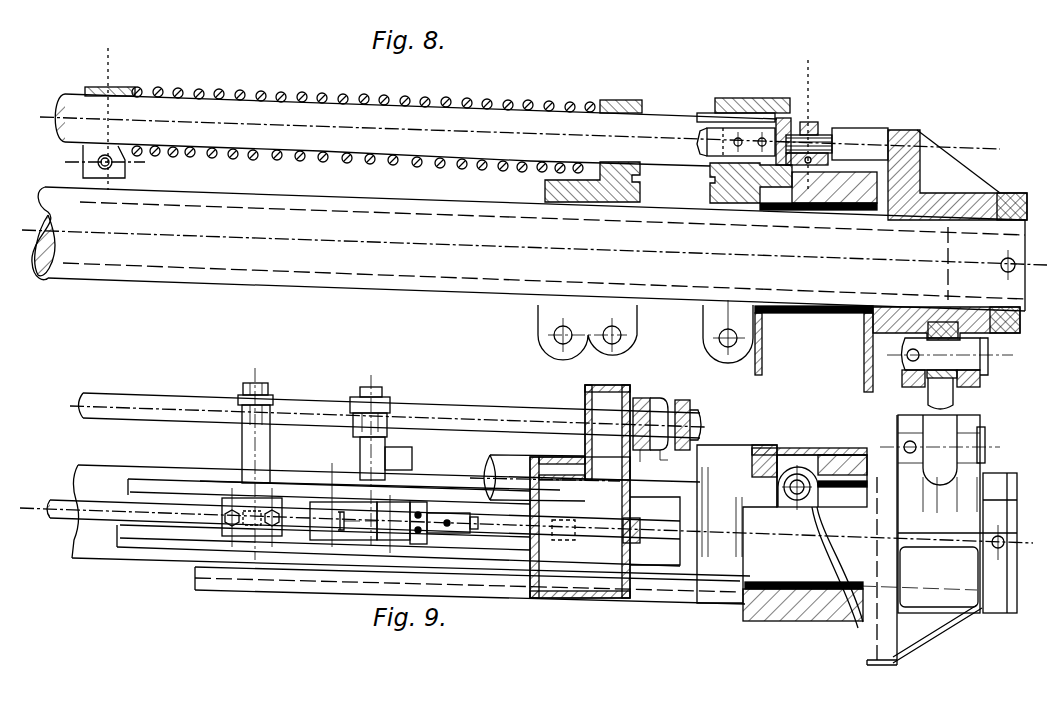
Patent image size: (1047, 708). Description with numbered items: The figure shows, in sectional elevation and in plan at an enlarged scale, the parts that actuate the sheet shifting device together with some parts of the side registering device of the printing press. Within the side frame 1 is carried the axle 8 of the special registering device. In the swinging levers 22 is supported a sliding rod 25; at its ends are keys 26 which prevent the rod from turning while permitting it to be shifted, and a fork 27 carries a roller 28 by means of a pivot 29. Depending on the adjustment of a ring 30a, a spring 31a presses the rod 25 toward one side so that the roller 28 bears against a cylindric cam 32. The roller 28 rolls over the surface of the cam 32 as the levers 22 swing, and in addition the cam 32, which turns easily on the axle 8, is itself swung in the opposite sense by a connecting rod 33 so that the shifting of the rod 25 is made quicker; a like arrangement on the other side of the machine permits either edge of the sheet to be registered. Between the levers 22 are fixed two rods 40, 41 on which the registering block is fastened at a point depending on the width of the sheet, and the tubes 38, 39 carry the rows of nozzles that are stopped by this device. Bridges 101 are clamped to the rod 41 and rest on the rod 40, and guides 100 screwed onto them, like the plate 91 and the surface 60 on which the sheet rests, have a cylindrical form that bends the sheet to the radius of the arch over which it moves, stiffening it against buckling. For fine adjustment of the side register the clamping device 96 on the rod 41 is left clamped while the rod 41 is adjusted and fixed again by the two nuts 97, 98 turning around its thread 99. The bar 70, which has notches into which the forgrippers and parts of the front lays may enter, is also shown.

In FIG. 8, the side frame 1 is at (847, 355).
In FIG. 9, the side frame 1 is at (787, 607).
In FIG. 8, the axle 8 is at (422, 285).
In FIG. 9, the axle 8 is at (82, 543).
In FIG. 8, the lever 22 is at (617, 107).
In FIG. 9, the lever 22 is at (565, 590).
In FIG. 8, the sliding rod 25 is at (463, 122).
In FIG. 9, the sliding rod 25 is at (493, 458).
In FIG. 8, the key 26 is at (707, 111).
In FIG. 8, the fork 27 is at (795, 122).
In FIG. 8, the roller 28 is at (833, 138).
In FIG. 9, the roller 28 is at (798, 457).
In FIG. 8, the pivot 29 is at (822, 128).
In FIG. 8, the ring 30a is at (123, 86).
In FIG. 8, the spring 31a is at (268, 95).
In FIG. 8, the cylindric cam 32 is at (834, 154).
In FIG. 9, the cylindric cam 32 is at (827, 527).
In FIG. 8, the connecting rod 33 is at (940, 423).
In FIG. 9, the tube 38 is at (155, 538).
In FIG. 9, the tube 39 is at (172, 488).
In FIG. 9, the rod 40 is at (62, 515).
In FIG. 9, the rod 41 is at (485, 413).
In FIG. 9, the surface 60 is at (388, 530).
In FIG. 9, the bar 70 is at (447, 573).
In FIG. 9, the plate 91 is at (330, 527).
In FIG. 9, the clamping device 96 is at (380, 400).
In FIG. 9, the nut 97 is at (640, 398).
In FIG. 9, the nut 98 is at (682, 403).
In FIG. 9, the thread 99 is at (695, 422).
In FIG. 9, the guide 100 is at (257, 530).
In FIG. 9, the bridge 101 is at (260, 462).